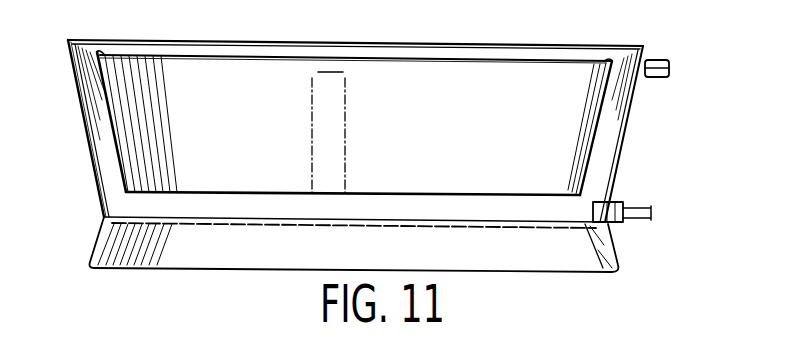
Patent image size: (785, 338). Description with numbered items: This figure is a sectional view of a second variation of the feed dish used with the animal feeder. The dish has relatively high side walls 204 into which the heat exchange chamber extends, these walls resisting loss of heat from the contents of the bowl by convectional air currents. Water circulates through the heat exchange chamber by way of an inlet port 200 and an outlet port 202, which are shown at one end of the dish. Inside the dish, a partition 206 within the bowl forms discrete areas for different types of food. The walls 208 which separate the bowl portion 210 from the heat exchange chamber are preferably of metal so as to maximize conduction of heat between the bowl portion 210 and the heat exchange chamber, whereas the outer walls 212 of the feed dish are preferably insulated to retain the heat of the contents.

The inlet port 200 is at (620, 200).
The outlet port 202 is at (648, 58).
The side walls 204 is at (98, 118).
The partition 206 is at (328, 72).
The walls 208 is at (590, 136).
The bowl portion 210 is at (250, 103).
The outer walls 212 is at (93, 180).